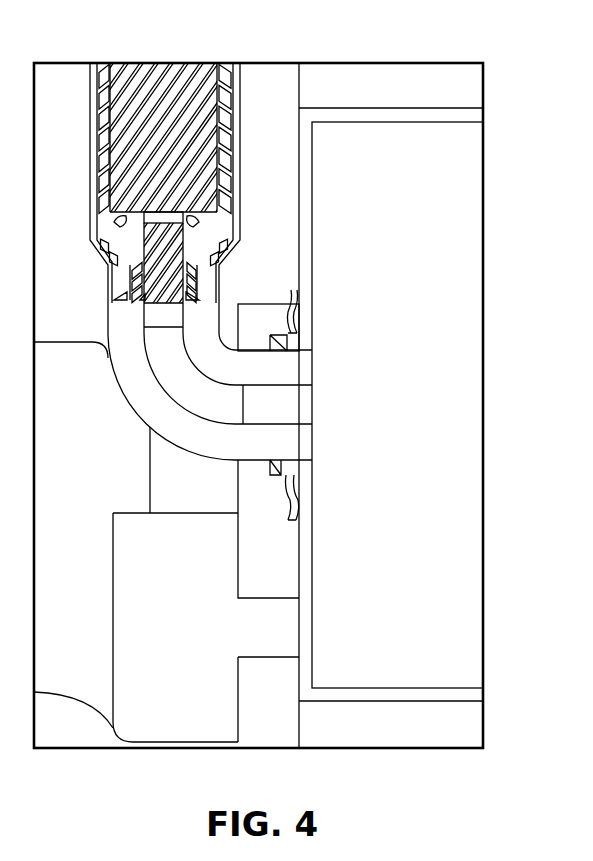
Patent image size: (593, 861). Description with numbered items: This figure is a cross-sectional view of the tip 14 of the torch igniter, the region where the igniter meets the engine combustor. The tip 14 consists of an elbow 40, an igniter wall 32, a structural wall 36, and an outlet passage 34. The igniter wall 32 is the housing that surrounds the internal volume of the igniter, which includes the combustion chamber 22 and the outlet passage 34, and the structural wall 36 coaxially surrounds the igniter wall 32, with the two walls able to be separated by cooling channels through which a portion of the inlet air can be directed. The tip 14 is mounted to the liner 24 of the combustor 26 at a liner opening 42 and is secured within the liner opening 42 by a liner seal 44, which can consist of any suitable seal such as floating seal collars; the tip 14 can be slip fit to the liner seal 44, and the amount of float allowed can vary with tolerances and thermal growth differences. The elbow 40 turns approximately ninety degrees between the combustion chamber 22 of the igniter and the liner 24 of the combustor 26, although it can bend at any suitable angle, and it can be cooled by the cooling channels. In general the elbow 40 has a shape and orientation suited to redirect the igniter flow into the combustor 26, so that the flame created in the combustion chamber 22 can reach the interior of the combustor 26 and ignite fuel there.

The tip 14 is at (86, 334).
The combustion chamber 22 is at (140, 90).
The liner 24 is at (484, 117).
The combustor 26 is at (446, 238).
The igniter wall 32 is at (203, 421).
The outlet passage 34 is at (292, 404).
The structural wall 36 is at (138, 412).
The elbow 40 is at (116, 405).
The liner opening 42 is at (312, 475).
The liner seal 44 is at (287, 323).